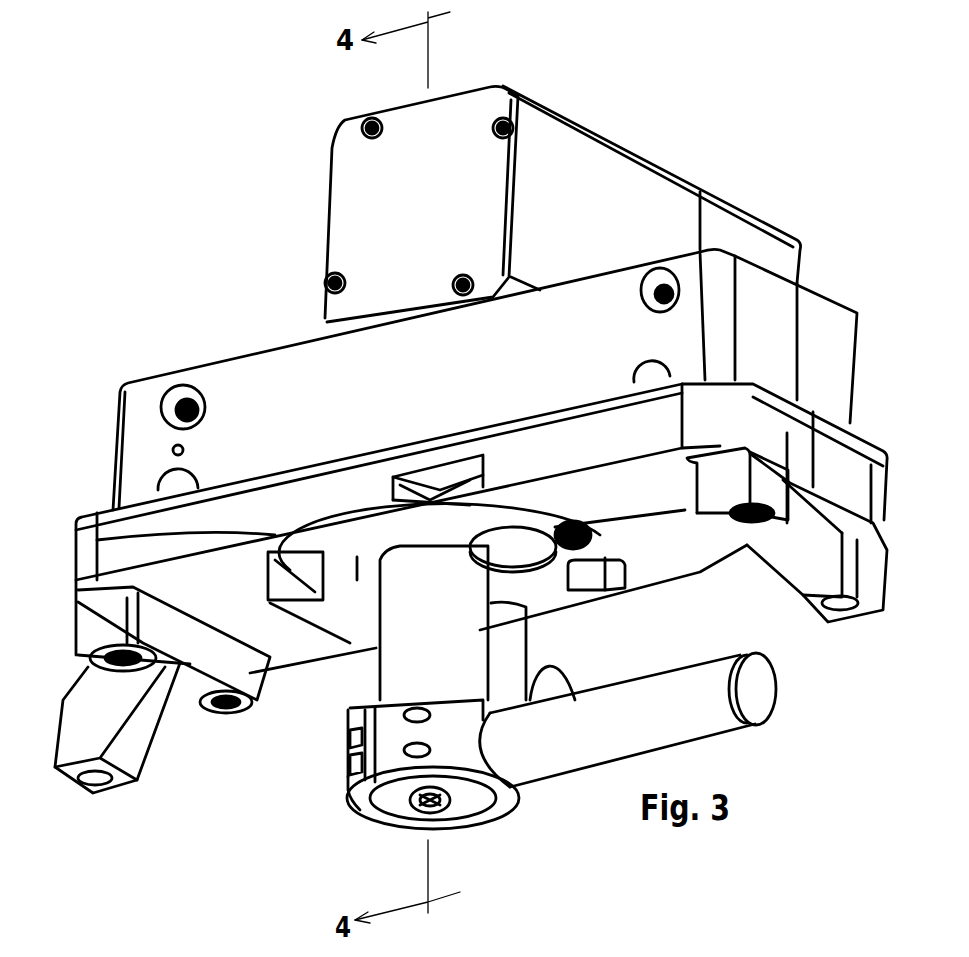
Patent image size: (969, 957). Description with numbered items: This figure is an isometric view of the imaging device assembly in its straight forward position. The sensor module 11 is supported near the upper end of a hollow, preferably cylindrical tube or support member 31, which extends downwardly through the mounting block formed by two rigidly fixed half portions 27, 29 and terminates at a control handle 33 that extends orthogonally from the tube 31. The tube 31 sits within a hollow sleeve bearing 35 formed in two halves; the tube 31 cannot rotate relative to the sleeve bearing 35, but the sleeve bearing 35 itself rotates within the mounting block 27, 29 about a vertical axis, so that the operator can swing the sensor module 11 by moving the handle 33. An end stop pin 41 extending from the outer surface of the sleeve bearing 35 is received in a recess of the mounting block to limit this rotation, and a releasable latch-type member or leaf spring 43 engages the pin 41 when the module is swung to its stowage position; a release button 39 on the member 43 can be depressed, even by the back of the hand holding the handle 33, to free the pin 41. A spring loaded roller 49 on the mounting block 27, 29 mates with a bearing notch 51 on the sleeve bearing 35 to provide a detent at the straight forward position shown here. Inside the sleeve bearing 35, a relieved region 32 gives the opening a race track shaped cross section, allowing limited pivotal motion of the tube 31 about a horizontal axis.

The sensor module 11 is at (648, 203).
The mounting block half portion 27 is at (825, 315).
The mounting block half portion 29 is at (272, 375).
The support member tube 31 is at (400, 635).
The relieved region 32 is at (543, 597).
The control handle 33 is at (750, 688).
The sleeve bearing 35 is at (293, 600).
The release button 39 is at (567, 588).
The end stop pin 41 is at (558, 527).
The leaf spring latch-type member 43 is at (447, 480).
The spring loaded roller 49 is at (300, 580).
The bearing notch 51 is at (275, 532).